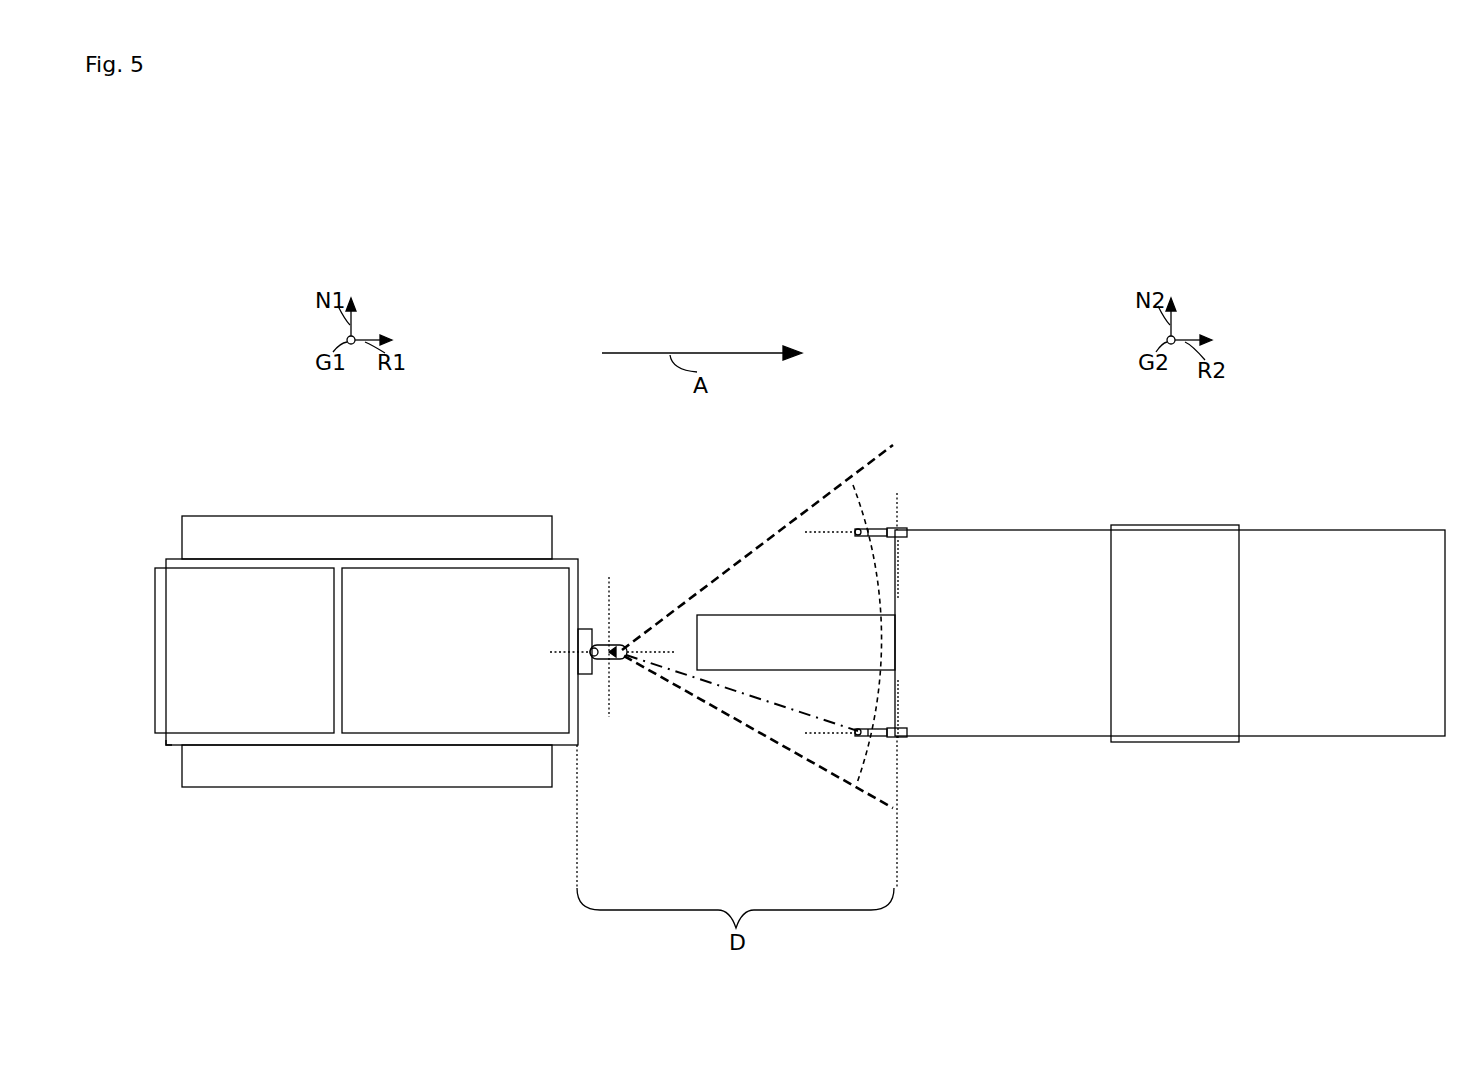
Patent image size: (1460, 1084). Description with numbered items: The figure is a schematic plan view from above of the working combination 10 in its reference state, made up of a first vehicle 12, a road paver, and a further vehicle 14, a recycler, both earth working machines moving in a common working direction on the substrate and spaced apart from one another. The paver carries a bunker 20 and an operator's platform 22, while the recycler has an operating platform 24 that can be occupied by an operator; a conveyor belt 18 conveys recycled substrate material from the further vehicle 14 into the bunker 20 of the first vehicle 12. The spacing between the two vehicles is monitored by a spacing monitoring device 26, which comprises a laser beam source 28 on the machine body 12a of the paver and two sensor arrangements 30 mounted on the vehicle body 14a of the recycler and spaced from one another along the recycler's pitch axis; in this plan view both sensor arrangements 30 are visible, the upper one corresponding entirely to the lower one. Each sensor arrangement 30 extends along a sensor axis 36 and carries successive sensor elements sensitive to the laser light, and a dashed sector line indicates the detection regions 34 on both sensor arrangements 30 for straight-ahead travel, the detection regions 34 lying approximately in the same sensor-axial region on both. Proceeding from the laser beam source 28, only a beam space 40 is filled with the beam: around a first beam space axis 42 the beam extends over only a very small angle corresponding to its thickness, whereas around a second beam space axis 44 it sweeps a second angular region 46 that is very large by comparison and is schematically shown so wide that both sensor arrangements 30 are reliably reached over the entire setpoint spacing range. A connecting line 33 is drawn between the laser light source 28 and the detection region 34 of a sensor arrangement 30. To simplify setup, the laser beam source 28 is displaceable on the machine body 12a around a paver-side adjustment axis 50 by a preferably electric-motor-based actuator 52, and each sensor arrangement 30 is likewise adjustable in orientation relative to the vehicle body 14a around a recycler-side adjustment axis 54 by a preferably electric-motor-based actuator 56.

The working combination 10 is at (244, 343).
The first vehicle 12 is at (258, 495).
The machine body 12a is at (170, 745).
The further vehicle 14 is at (1108, 477).
The vehicle body 14a is at (1058, 638).
The conveyor belt 18 is at (796, 642).
The bunker 20 is at (455, 650).
The operator's platform 22 is at (183, 637).
The operating platform 24 is at (1210, 545).
The spacing monitoring device 26 is at (660, 497).
The laser beam source 28 is at (600, 643).
The sensor arrangement 30 is at (880, 528).
The connecting line 33 is at (832, 718).
The detection region 34 is at (870, 540).
The sensor axis 36 is at (812, 534).
The beam space 40 is at (787, 523).
The first beam space axis 42 is at (609, 715).
The second beam space axis 44 is at (557, 650).
The second angular region 46 is at (650, 627).
The paver-side adjustment axis 50 is at (544, 718).
The actuator 52 is at (586, 674).
The recycler-side adjustment axis 54 is at (900, 570).
The actuator 56 is at (907, 533).